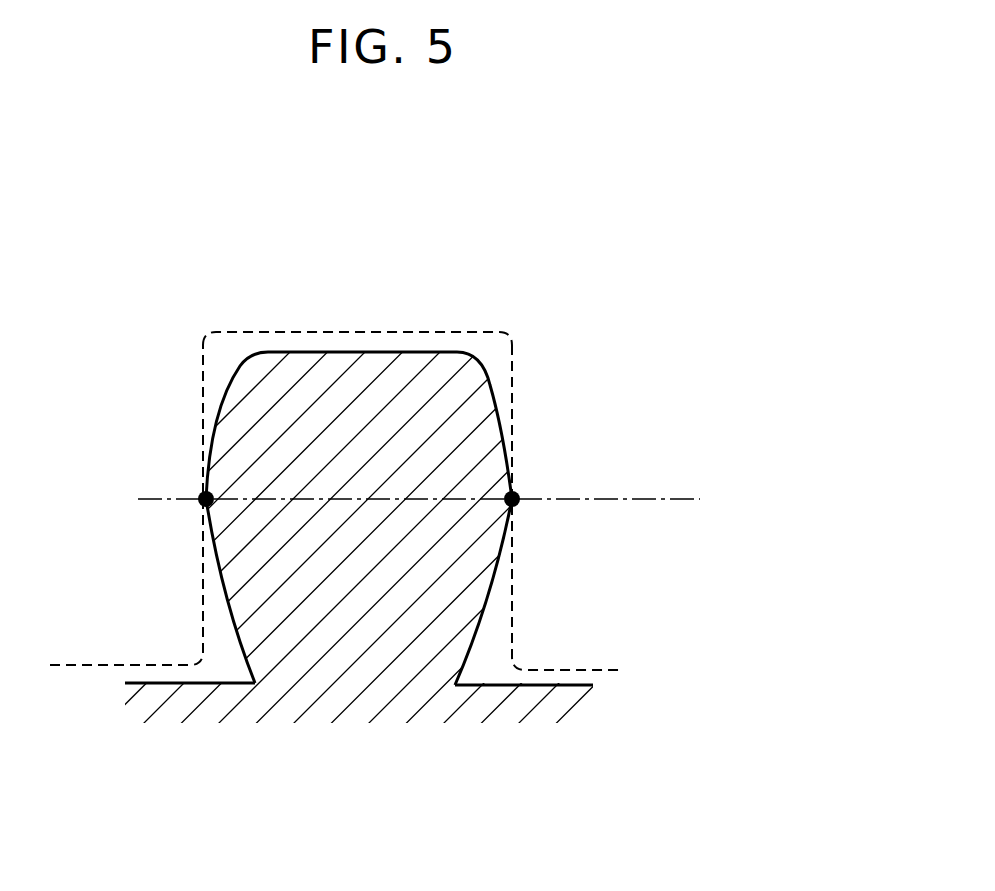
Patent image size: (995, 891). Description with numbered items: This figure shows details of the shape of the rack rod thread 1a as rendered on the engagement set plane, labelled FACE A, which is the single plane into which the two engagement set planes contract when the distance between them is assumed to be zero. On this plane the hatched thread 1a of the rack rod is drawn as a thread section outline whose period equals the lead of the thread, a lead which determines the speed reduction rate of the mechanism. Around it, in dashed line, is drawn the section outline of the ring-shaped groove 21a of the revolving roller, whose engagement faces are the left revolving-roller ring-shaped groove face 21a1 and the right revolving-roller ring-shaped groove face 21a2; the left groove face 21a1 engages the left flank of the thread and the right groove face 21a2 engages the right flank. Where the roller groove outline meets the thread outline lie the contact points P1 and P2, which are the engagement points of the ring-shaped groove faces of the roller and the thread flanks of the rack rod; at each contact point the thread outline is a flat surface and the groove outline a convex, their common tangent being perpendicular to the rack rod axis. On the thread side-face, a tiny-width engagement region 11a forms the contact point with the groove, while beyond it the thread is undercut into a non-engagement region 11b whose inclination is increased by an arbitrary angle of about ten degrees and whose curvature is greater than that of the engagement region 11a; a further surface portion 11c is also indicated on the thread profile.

The rack rod thread 1a is at (497, 470).
The ring-shaped groove 21a is at (358, 429).
The left revolving-roller ring-shaped groove face 21a1 is at (203, 423).
The right revolving-roller ring-shaped groove face 21a2 is at (515, 372).
The engagement region A 11a is at (510, 485).
The non-engagement region B 11b is at (468, 640).
The upper curved surface 11c is at (490, 402).
The contact point P1 is at (200, 499).
The contact point P2 is at (512, 499).
The engagement set plane A FACE A is at (201, 667).